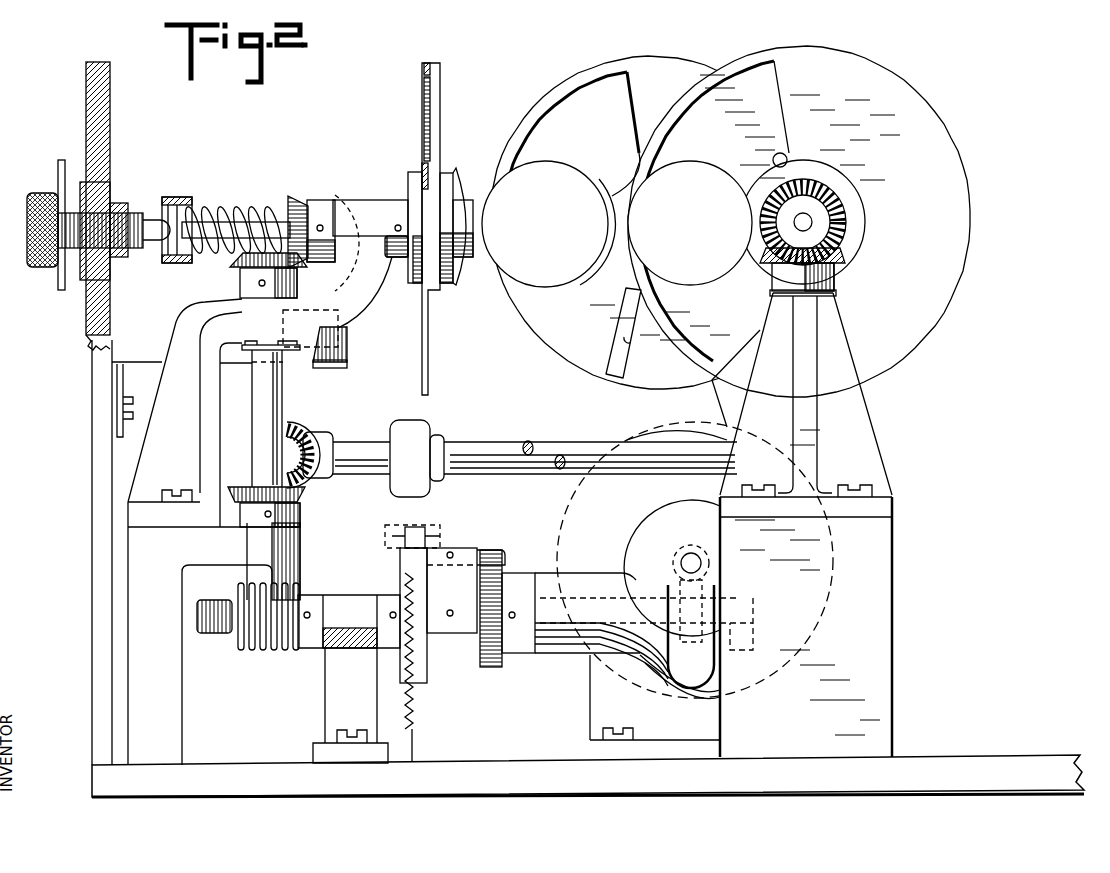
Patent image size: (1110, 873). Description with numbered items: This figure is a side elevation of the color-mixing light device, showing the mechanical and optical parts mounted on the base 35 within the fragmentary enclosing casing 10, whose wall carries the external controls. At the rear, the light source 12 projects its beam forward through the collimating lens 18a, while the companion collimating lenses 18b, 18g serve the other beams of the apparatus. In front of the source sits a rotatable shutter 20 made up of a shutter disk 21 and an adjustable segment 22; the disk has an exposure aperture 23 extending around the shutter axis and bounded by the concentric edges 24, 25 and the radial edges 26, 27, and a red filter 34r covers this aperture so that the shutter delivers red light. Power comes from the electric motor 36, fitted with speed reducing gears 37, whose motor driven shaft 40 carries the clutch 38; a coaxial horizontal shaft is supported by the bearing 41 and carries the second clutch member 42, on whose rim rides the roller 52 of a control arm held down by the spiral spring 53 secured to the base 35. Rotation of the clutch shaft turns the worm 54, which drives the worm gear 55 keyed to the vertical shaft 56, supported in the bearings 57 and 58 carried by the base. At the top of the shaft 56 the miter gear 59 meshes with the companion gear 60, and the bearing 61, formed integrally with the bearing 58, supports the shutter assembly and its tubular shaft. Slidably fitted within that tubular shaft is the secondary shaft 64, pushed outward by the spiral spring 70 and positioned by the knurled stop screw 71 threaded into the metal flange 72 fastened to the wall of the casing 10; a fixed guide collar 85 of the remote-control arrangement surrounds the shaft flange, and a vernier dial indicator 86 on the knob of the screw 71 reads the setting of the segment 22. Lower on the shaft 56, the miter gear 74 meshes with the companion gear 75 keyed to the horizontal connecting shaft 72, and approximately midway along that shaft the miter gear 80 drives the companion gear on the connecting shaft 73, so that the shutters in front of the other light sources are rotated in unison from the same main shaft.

The enclosing casing 10 is at (100, 430).
The light source 12 is at (308, 200).
The collimating lens 18a is at (462, 178).
The collimating lens 18b is at (500, 275).
The roller 18g is at (705, 272).
The rotatable shutter 20 is at (432, 84).
The shutter disk 21 is at (417, 67).
The adjustable segment 22 is at (435, 121).
The exposure aperture 23 is at (421, 99).
The concentric edge 24 is at (552, 110).
The concentric edge 25 is at (794, 148).
The radial edge 26 is at (632, 350).
The radial edge 27 is at (624, 113).
The red filter 34r is at (420, 150).
The base 35 is at (250, 774).
The electric motor 36 is at (570, 520).
The speed reducing gears 37 is at (673, 568).
The clutch 38 is at (493, 667).
The motor driven shaft 40 is at (556, 632).
The bearing 41 is at (340, 600).
The second clutch member 42 is at (457, 573).
The roller 52 is at (408, 527).
The spiral spring 53 is at (429, 655).
The worm 54 is at (260, 653).
The worm gear 55 is at (213, 637).
The vertical shaft 56 is at (281, 383).
The bearing 57 is at (253, 331).
The bearing 58 is at (344, 339).
The miter gear 59 is at (240, 274).
The companion gear 60 is at (300, 196).
The bearing 61 is at (373, 203).
The secondary shaft 64 is at (222, 213).
The spiral spring 70 is at (237, 208).
The knurled stop screw 71 is at (115, 218).
The threaded metal flange 72 is at (110, 195).
The connecting shaft 73 is at (560, 471).
The miter gear 74 is at (230, 501).
The companion gear 75 is at (292, 431).
The miter gear 80 is at (418, 426).
The fixed guide collar 85 is at (180, 200).
The vernier dial indicator 86 is at (58, 182).